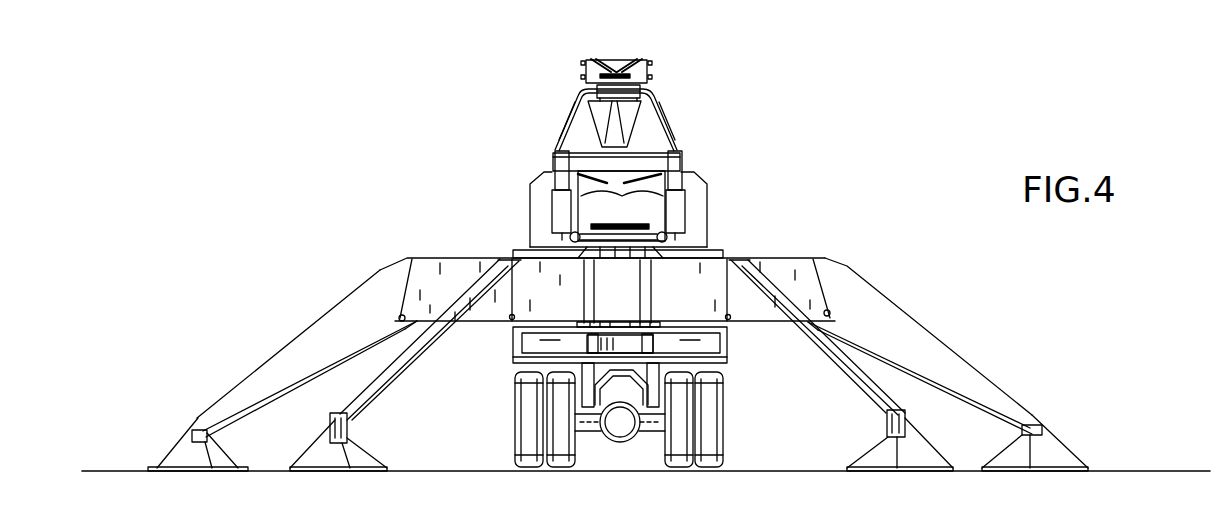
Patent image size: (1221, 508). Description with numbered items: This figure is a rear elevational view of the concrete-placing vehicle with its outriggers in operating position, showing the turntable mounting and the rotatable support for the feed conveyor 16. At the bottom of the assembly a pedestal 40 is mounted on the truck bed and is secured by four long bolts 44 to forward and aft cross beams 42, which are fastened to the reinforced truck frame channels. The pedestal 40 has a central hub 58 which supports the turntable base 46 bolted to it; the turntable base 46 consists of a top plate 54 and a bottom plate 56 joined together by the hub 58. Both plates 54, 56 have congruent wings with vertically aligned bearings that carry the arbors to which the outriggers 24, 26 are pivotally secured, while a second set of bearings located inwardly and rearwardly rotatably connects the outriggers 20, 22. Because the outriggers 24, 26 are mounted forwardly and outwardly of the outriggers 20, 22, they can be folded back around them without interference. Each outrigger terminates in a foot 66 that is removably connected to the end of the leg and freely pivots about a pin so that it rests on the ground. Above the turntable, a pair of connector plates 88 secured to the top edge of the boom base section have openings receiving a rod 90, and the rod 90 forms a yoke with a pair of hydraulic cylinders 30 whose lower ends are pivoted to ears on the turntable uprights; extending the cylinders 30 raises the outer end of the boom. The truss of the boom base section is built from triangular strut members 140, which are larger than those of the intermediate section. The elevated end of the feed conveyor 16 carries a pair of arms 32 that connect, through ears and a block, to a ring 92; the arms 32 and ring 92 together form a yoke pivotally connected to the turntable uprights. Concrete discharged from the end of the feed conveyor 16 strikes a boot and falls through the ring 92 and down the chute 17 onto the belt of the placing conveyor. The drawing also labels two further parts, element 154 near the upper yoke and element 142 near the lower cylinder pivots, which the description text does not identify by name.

The feed conveyor 16 is at (583, 69).
The clamp/wing members 154 is at (620, 60).
The ring 92 is at (647, 77).
The chute 17 is at (658, 113).
The arms 32 is at (576, 100).
The rod 90 is at (602, 139).
The connector plates 88 is at (683, 153).
The hydraulic cylinders 30 is at (684, 205).
The triangular strut members 140 is at (621, 206).
The pivot pins 142 is at (677, 236).
The top plate 54 is at (658, 258).
The central hub 58 is at (618, 322).
The bottom plate 56 is at (660, 324).
The turntable base 46 is at (632, 348).
The pedestal 40 is at (660, 340).
The long bolts 44 is at (650, 389).
The cross beams 42 is at (620, 384).
The outrigger 24 is at (332, 330).
The outrigger 20 is at (402, 384).
The outrigger 22 is at (825, 367).
The outrigger 26 is at (925, 338).
The foot 66 is at (363, 458).